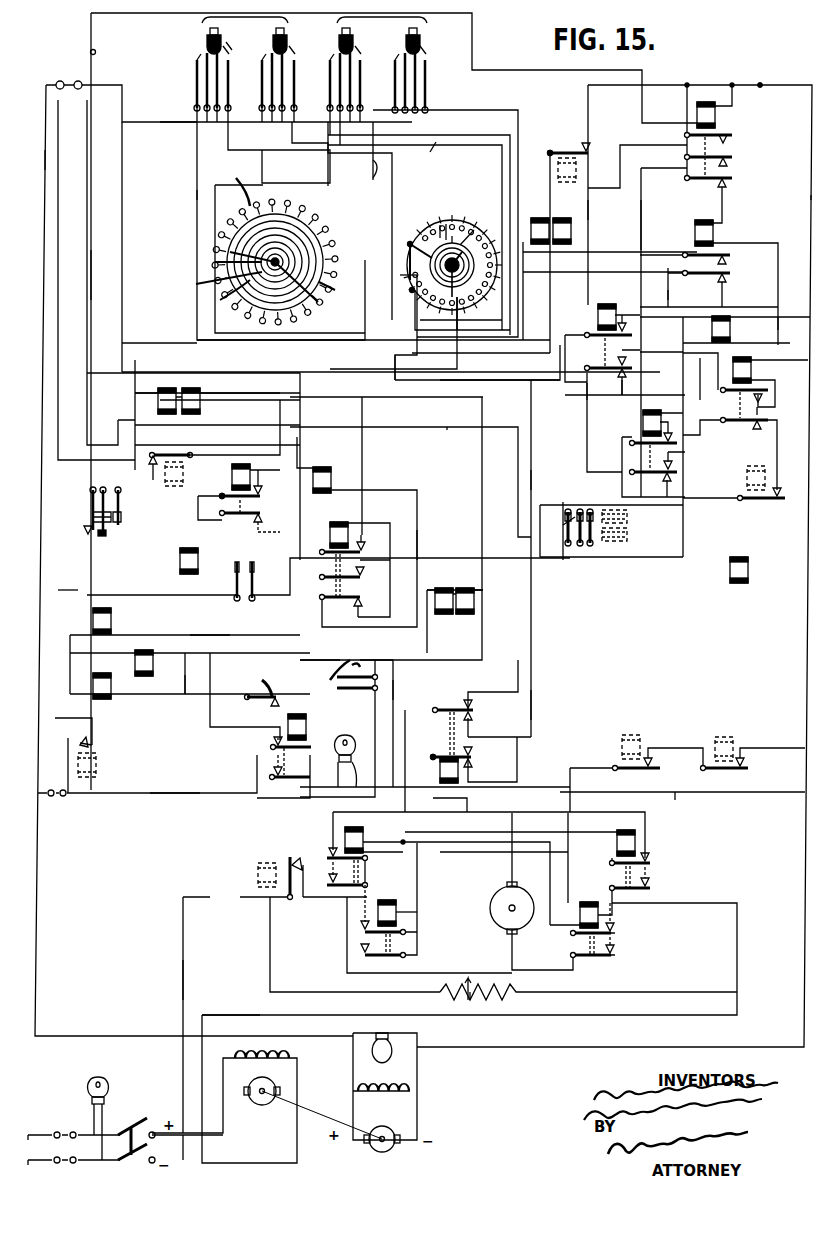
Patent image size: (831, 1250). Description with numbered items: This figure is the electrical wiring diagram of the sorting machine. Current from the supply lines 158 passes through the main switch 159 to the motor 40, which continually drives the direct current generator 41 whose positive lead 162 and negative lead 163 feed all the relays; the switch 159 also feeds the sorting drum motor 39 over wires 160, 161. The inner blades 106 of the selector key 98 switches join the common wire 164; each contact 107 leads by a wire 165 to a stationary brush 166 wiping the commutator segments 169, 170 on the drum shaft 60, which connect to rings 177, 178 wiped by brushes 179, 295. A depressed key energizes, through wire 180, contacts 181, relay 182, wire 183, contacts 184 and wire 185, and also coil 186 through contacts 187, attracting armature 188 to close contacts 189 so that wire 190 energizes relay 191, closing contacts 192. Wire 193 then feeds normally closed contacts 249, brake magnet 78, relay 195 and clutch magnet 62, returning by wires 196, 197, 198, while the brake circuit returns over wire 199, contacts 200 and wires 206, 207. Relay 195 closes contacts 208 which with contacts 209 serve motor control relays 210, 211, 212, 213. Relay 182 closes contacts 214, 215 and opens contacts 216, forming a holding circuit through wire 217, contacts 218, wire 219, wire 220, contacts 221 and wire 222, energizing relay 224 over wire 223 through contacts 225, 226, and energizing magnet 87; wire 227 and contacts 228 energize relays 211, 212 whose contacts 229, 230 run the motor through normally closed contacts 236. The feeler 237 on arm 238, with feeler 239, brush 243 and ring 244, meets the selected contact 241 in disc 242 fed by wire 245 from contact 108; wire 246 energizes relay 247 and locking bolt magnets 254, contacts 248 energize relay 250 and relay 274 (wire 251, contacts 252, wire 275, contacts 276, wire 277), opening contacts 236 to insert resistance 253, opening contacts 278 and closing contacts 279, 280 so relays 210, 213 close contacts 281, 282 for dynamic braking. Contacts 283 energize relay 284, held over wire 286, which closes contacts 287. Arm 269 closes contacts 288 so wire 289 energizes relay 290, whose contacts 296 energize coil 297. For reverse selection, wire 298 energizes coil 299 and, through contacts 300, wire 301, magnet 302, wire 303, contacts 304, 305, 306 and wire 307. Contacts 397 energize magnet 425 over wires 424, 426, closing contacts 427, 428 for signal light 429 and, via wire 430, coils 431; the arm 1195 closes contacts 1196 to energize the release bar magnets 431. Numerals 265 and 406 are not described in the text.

The motor 39 is at (502, 918).
The motor 40 is at (260, 1106).
The generator 41 is at (388, 1148).
The compartment drum shaft 60 is at (278, 256).
The clutch magnet 62 is at (111, 688).
The brake magnet 78 is at (96, 622).
The magnet 87 is at (730, 330).
The selector key 98 is at (207, 35).
The inner pair of blades 106 is at (210, 86).
The contacts 107 is at (200, 60).
The contact 108 is at (434, 57).
The lines 158 is at (42, 1135).
The switch 159 is at (140, 1108).
The wire 160 is at (183, 975).
The wire 161 is at (258, 1014).
The positive lead 162 is at (45, 165).
The negative lead 163 is at (811, 196).
The common wire 164 is at (180, 124).
The wire 165 is at (197, 190).
The brushes 166 is at (218, 241).
The segment 169 is at (236, 184).
The segment 170 is at (232, 306).
The ring 177 is at (324, 214).
The ring 178 is at (212, 290).
The brush 179 is at (332, 290).
The wire 180 is at (418, 345).
The contacts 181 is at (716, 280).
The relay 182 is at (598, 321).
The wire 183 is at (588, 210).
The contacts 184 is at (728, 136).
The wire 185 is at (760, 85).
The coil 186 is at (538, 220).
The contacts 187 is at (584, 148).
The armature 188 is at (568, 526).
The contacts 189 is at (588, 512).
The wire 190 is at (447, 428).
The relay 191 is at (734, 568).
The contacts 192 is at (86, 736).
The wire 193 is at (78, 586).
The relay 195 is at (154, 658).
The wire 196 is at (334, 666).
The wire 197 is at (394, 694).
The wire 198 is at (675, 792).
The wire 199 is at (200, 640).
The contacts 200 is at (254, 518).
The wire 206 is at (280, 416).
The wire 207 is at (364, 500).
The contacts 208 is at (746, 769).
The contacts 209 is at (654, 769).
The motor control relay 210 is at (617, 843).
The motor control relay 211 is at (580, 914).
The motor control relay 212 is at (345, 834).
The motor control relay 213 is at (417, 912).
The contacts 214 is at (626, 338).
The contacts 215 is at (602, 362).
The contacts 216 is at (609, 376).
The wire 217 is at (468, 381).
The contacts 218 is at (664, 480).
The wire 219 is at (586, 412).
The wire 220 is at (710, 352).
The contacts 221 is at (740, 398).
The wire 222 is at (796, 314).
The wire 223 is at (748, 347).
The relay coil 224 is at (695, 239).
The contacts 225 is at (722, 186).
The contacts 226 is at (728, 158).
The wire 227 is at (524, 492).
The contacts 228 is at (451, 701).
The contacts 229 is at (618, 956).
The contacts 230 is at (328, 866).
The contacts 236 is at (294, 859).
The feeler 237 is at (426, 257).
The arm 238 is at (450, 312).
The feeler 239 is at (412, 242).
The contact point 241 is at (444, 224).
The insulating disc 242 is at (454, 220).
The brush 243 is at (462, 250).
The common ring 244 is at (474, 230).
The wire 245 is at (390, 174).
The wire 246 is at (328, 343).
The relay coil 247 is at (172, 492).
The contacts 248 is at (142, 461).
The contacts 249 is at (86, 536).
The relay coil 250 is at (232, 476).
The wire 251 is at (198, 514).
The contacts 252 is at (262, 498).
The resistance 253 is at (440, 1000).
The locking bolt magnets 254 is at (202, 394).
The contact 265 is at (358, 575).
The arm 269 is at (104, 546).
The relay coil 274 is at (330, 478).
The wire 275 is at (417, 541).
The contacts 276 is at (355, 606).
The wire 277 is at (364, 524).
The contacts 278 is at (474, 760).
The contacts 279 is at (472, 720).
The contacts 280 is at (472, 766).
The contacts 281 is at (652, 888).
The contacts 282 is at (358, 950).
The contacts 283 is at (252, 572).
The relay coil 284 is at (338, 526).
The wire 286 is at (683, 534).
The contacts 287 is at (380, 542).
The contacts 288 is at (115, 522).
The wire 289 is at (91, 52).
The relay coil 290 is at (716, 113).
The brush 295 is at (215, 272).
The contacts 296 is at (776, 500).
The coil 297 is at (751, 376).
The wire 298 is at (198, 343).
The relay coil 299 is at (571, 240).
The contacts 300 is at (724, 260).
The wire 301 is at (668, 294).
The magnet 302 is at (642, 427).
The wire 303 is at (640, 222).
The contacts 304 is at (680, 474).
The contacts 305 is at (649, 451).
The contacts 306 is at (760, 422).
The wire 307 is at (531, 710).
The contacts 397 is at (279, 696).
The switch cam 406 is at (262, 680).
The wire 424 is at (166, 796).
The magnet 425 is at (578, 172).
The wire 426 is at (184, 694).
The contacts 427 is at (270, 780).
The contacts 428 is at (272, 746).
The signal light 429 is at (356, 780).
The wire 430 is at (310, 648).
The release bar magnets 431 is at (452, 584).
The arm 1195 is at (360, 648).
The contacts 1196 is at (364, 688).